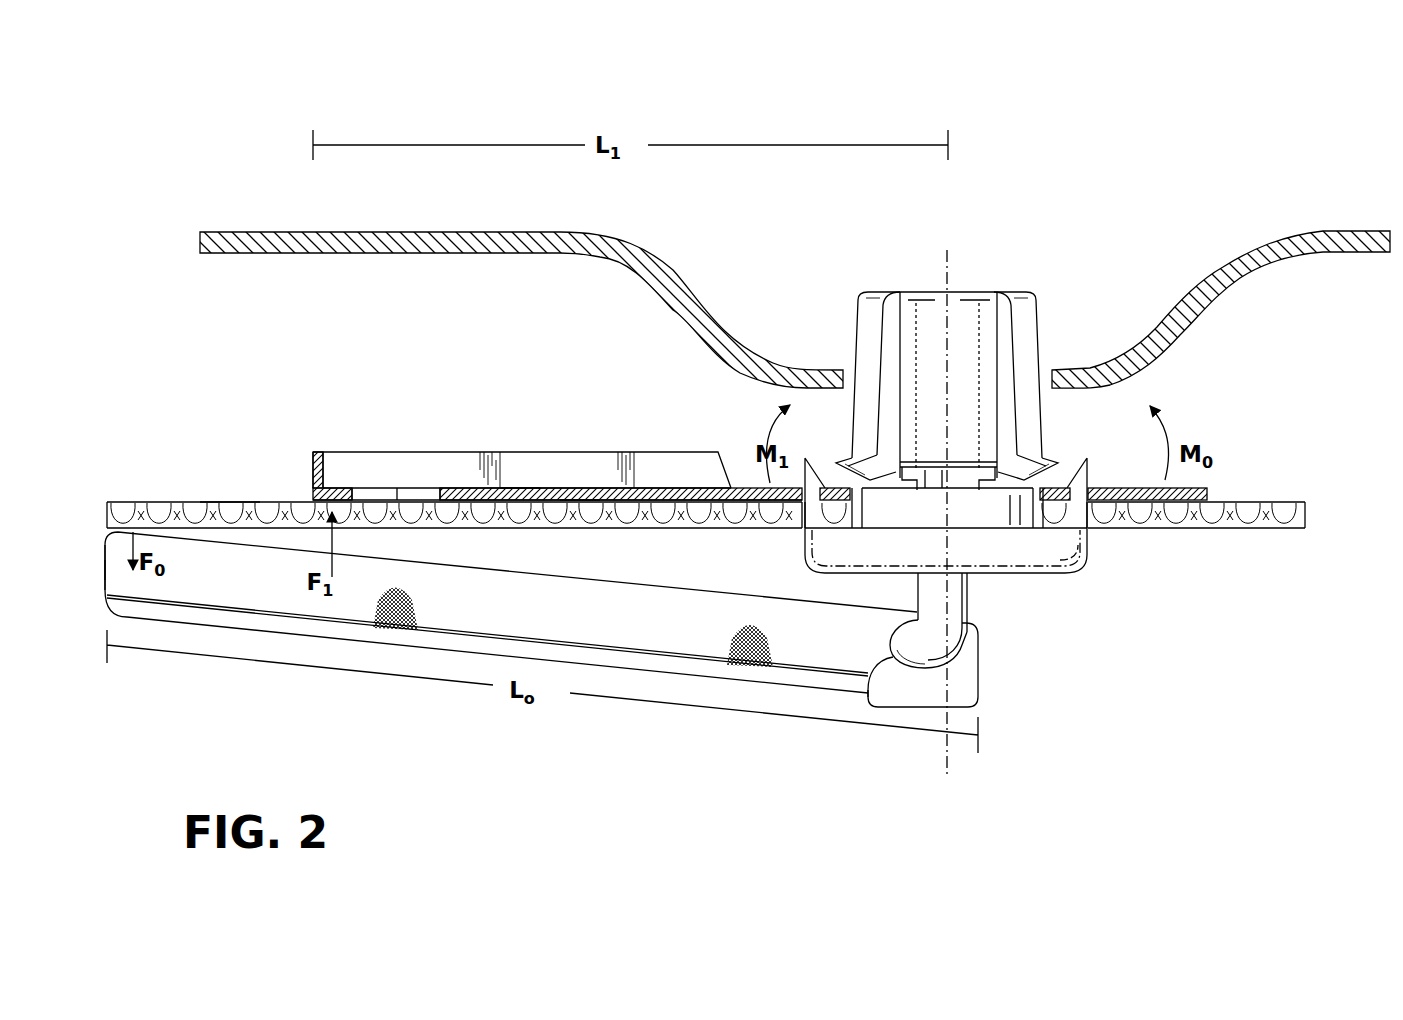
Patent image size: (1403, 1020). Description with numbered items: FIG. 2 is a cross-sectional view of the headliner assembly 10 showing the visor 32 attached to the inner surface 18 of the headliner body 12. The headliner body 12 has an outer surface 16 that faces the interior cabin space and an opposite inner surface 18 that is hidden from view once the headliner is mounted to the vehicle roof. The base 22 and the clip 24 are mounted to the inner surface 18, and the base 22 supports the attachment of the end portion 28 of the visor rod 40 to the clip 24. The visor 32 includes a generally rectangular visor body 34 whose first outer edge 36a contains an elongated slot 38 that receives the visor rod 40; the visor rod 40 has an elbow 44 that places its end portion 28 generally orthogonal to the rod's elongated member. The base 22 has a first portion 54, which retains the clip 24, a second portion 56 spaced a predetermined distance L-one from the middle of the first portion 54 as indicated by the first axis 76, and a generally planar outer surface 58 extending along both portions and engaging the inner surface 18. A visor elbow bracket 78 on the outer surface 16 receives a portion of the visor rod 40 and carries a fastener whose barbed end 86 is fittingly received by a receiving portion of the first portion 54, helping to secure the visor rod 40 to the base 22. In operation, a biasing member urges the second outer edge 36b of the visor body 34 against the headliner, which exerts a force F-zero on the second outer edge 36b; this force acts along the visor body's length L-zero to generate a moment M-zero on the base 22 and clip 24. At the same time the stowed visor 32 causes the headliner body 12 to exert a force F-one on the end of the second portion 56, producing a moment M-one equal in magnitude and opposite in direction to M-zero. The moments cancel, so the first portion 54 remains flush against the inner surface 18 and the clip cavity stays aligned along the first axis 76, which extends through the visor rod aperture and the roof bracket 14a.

The headliner assembly 10 is at (80, 576).
The headliner body 12 is at (151, 485).
The roof bracket 14a is at (630, 243).
The outer surface 16 is at (1203, 530).
The inner surface 18 is at (237, 500).
The base 22 is at (368, 430).
The clip 24 is at (985, 356).
The end portion 28 is at (962, 300).
The visor 32 is at (489, 658).
The visor body 34 is at (526, 620).
The first outer edge 36a is at (980, 688).
The second outer edge 36b is at (104, 583).
The elongated slot 38 is at (893, 658).
The visor rod 40 is at (972, 600).
The elbow 44 is at (975, 642).
The first portion 54 is at (1095, 490).
The second portion 56 is at (515, 490).
The outer surface 58 is at (556, 506).
The first axis 76 is at (945, 270).
The visor elbow bracket 78 is at (1072, 558).
The barbed end 86 is at (800, 515).